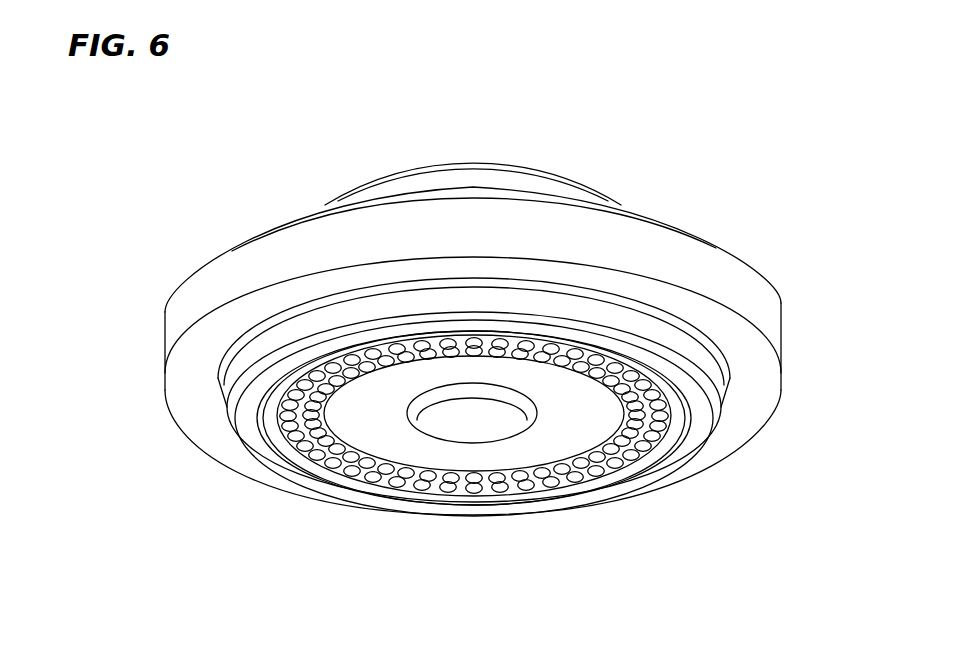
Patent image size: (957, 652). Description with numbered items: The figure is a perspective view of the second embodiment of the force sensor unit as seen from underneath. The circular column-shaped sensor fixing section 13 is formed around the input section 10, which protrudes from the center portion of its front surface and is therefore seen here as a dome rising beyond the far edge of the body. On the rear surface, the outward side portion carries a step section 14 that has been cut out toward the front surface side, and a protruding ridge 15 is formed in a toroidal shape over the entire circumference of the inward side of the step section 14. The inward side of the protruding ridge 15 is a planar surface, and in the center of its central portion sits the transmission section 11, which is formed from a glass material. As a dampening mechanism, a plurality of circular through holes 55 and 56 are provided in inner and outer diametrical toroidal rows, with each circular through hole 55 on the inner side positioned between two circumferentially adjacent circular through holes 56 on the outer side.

The input section 10 is at (418, 177).
The transmission section 11 is at (478, 430).
The sensor fixing section 13 is at (724, 196).
The step section 14 is at (755, 398).
The protruding ridge 15 is at (693, 433).
The circular through holes 55 is at (577, 463).
The circular through holes 56 is at (642, 445).